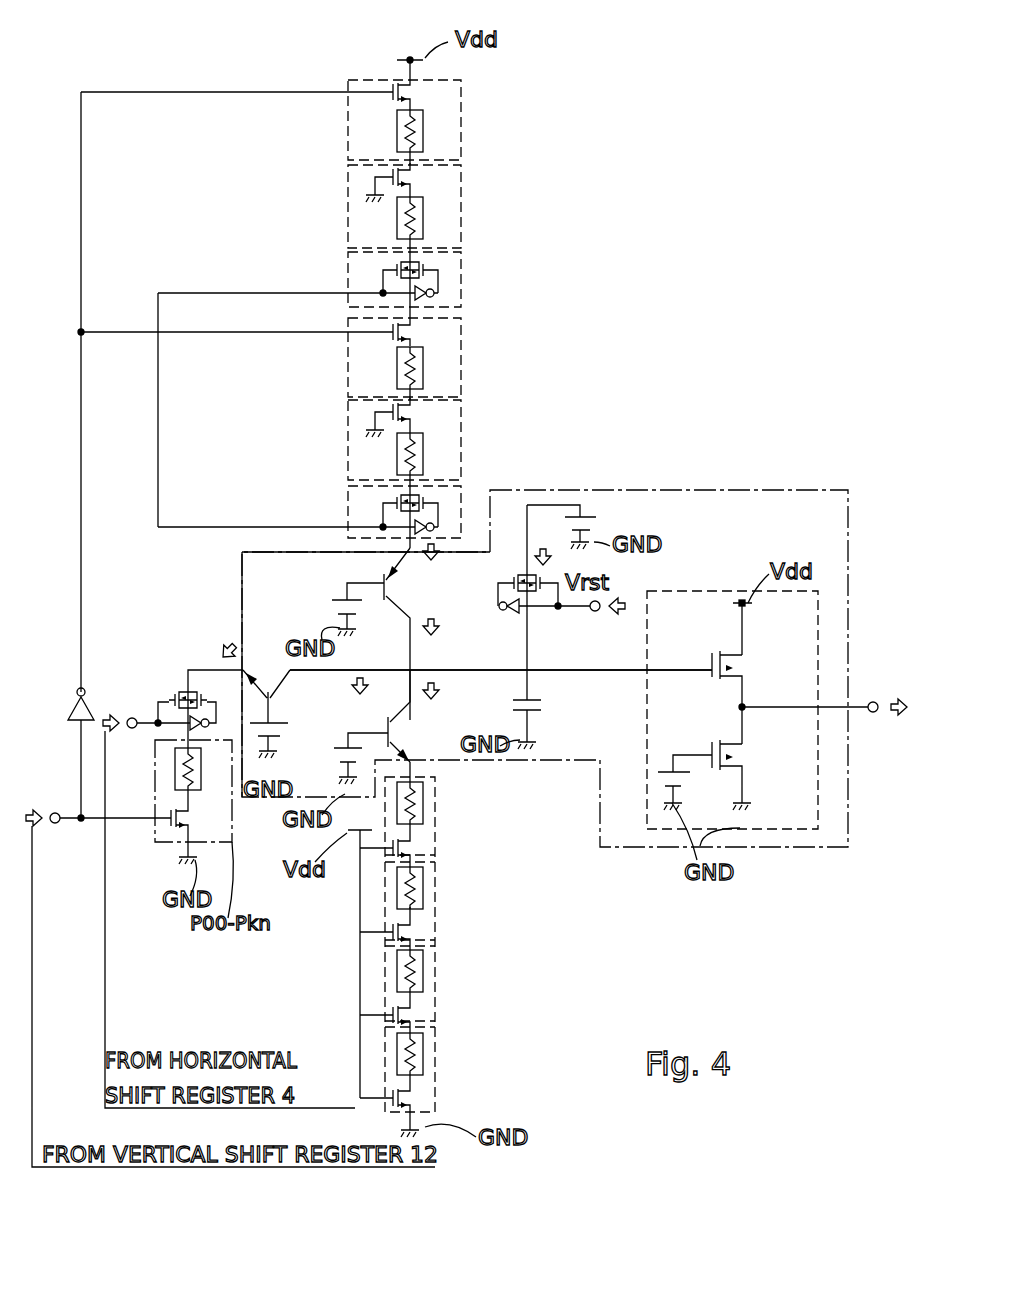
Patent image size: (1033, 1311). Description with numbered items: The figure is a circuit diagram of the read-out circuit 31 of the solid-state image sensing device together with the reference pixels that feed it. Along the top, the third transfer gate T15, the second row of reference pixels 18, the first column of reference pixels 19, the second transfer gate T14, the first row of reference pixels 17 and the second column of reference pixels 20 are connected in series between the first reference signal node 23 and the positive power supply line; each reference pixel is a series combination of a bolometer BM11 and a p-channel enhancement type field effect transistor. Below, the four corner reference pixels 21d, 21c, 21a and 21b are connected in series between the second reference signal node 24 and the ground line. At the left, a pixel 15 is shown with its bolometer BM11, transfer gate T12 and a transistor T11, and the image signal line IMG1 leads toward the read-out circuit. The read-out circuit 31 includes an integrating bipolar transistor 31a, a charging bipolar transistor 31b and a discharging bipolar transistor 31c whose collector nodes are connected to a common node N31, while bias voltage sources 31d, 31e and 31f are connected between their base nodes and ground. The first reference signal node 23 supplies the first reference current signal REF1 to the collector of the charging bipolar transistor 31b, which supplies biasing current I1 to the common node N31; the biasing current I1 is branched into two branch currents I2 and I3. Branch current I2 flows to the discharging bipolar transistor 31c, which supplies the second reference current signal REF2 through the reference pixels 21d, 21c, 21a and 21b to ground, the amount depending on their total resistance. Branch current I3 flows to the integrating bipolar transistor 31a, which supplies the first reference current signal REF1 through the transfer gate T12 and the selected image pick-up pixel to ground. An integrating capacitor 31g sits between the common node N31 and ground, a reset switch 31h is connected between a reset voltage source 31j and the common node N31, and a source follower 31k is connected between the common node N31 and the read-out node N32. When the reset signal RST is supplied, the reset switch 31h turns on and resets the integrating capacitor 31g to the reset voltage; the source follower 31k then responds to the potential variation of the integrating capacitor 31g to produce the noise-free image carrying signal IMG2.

The second column of reference pixels 20 is at (470, 96).
The first row of reference pixels 17 is at (470, 182).
The second transfer gate T14 is at (468, 258).
The first column of reference pixels 19 is at (470, 333).
The second row of reference pixels 18 is at (470, 410).
The third transfer gate T15 is at (462, 495).
The read-out circuit 31 is at (740, 488).
The first reference signal node 23 is at (345, 550).
The image signal line IMG1 is at (237, 640).
The first reference current signal REF1 is at (451, 562).
The charging bipolar transistor 31b is at (412, 603).
The bias voltage source 31e is at (345, 598).
The common node N31 is at (416, 670).
The biasing current I1 is at (445, 628).
The branch current I2 is at (445, 692).
The branch current I3 is at (360, 701).
The integrating bipolar transistor 31a is at (287, 696).
The bias voltage source 31d is at (277, 742).
The discharging bipolar transistor 31c is at (415, 722).
The bias voltage source 31f is at (346, 750).
The reset switch 31h is at (546, 602).
The reset signal RST is at (612, 616).
The reset voltage source 31j is at (600, 516).
The integrating capacitor 31g is at (545, 706).
The source follower 31k is at (690, 592).
The read-out node N32 is at (873, 700).
The noise-free image carrying signal IMG2 is at (876, 716).
The second reference current signal REF2 is at (420, 766).
The second reference signal node 24 is at (435, 790).
The reference pixel 21d is at (437, 851).
The reference pixel 21c is at (437, 912).
The reference pixel 21a is at (437, 980).
The reference pixel 21b is at (437, 1100).
The transfer gate T12 is at (181, 688).
The pixel cell 15 is at (205, 688).
The bolometer BM11 is at (220, 821).
The select transistor T11 is at (170, 832).